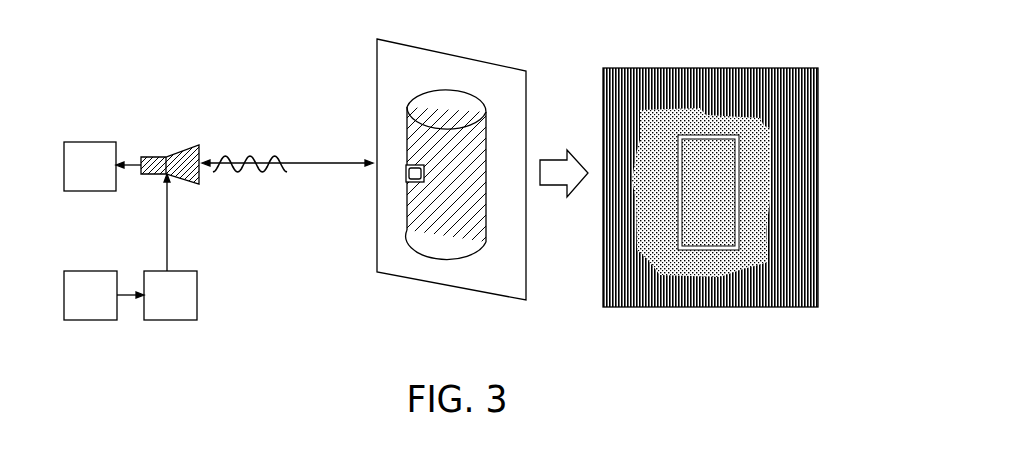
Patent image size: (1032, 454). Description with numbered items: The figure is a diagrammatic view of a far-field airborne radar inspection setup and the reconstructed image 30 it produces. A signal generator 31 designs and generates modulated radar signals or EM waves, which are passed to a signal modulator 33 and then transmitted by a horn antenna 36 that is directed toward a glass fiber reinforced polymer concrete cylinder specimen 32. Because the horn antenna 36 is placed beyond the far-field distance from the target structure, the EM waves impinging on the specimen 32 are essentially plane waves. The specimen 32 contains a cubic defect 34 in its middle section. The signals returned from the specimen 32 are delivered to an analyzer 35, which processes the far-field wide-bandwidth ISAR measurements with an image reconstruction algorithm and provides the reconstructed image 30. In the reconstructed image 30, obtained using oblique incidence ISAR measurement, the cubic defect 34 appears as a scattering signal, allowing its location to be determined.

The reconstructed image 30 is at (746, 68).
The signal generator 31 is at (89, 320).
The GFRP concrete cylinder specimen 32 is at (486, 228).
The signal modulator 33 is at (175, 320).
The cubic defect 34 is at (408, 165).
The analyzer 35 is at (90, 141).
The horn antenna 36 is at (159, 157).